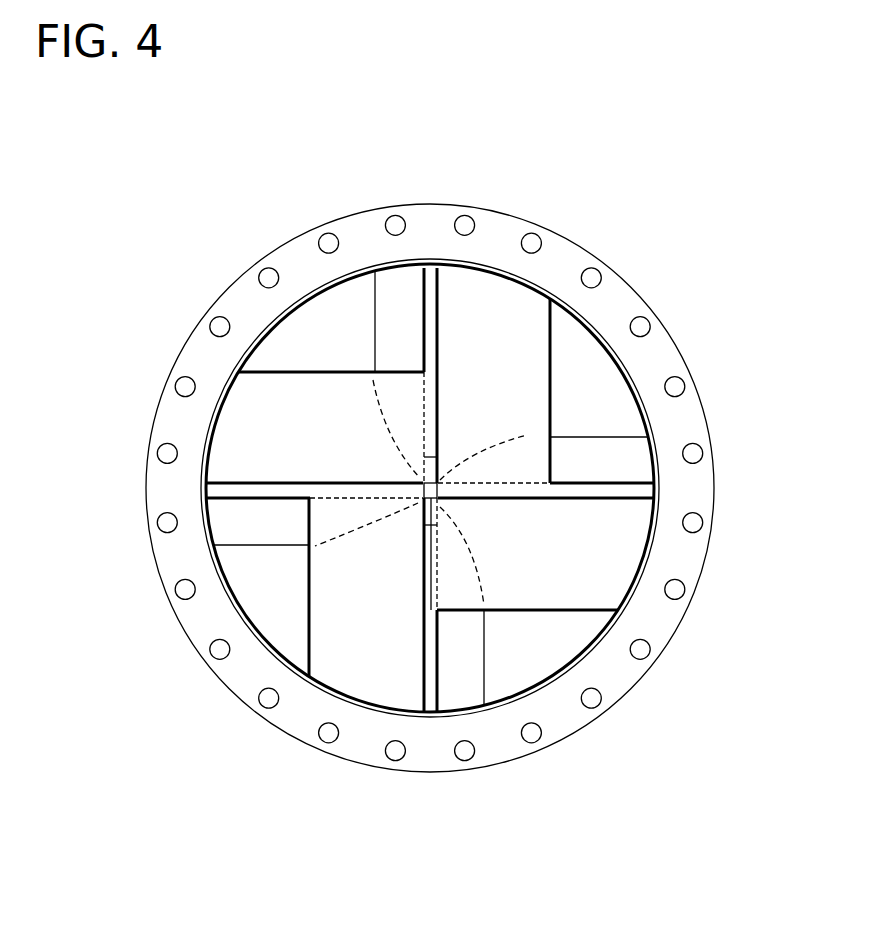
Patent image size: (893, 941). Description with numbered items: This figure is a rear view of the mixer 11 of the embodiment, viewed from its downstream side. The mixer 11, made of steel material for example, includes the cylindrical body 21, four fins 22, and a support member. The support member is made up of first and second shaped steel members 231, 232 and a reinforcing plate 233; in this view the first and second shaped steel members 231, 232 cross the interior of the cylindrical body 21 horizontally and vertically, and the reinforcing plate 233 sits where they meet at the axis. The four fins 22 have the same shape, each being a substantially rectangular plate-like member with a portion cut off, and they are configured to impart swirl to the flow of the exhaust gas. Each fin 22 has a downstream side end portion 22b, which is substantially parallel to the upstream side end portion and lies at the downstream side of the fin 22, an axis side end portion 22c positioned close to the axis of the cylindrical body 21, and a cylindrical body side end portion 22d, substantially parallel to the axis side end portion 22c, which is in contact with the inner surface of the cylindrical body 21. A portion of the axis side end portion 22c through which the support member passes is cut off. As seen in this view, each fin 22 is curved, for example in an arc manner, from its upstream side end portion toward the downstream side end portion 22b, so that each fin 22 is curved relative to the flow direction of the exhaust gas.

The mixer 11 is at (138, 214).
The cylindrical body 21 is at (630, 287).
The fin 22 is at (547, 594).
The downstream side end portion 22b is at (532, 612).
The axis side end portion 22c is at (428, 580).
The cylindrical body side end portion 22d is at (657, 543).
The first shaped steel member 231 is at (658, 492).
The second shaped steel member 232 is at (428, 705).
The reinforcing plate 233 is at (423, 527).